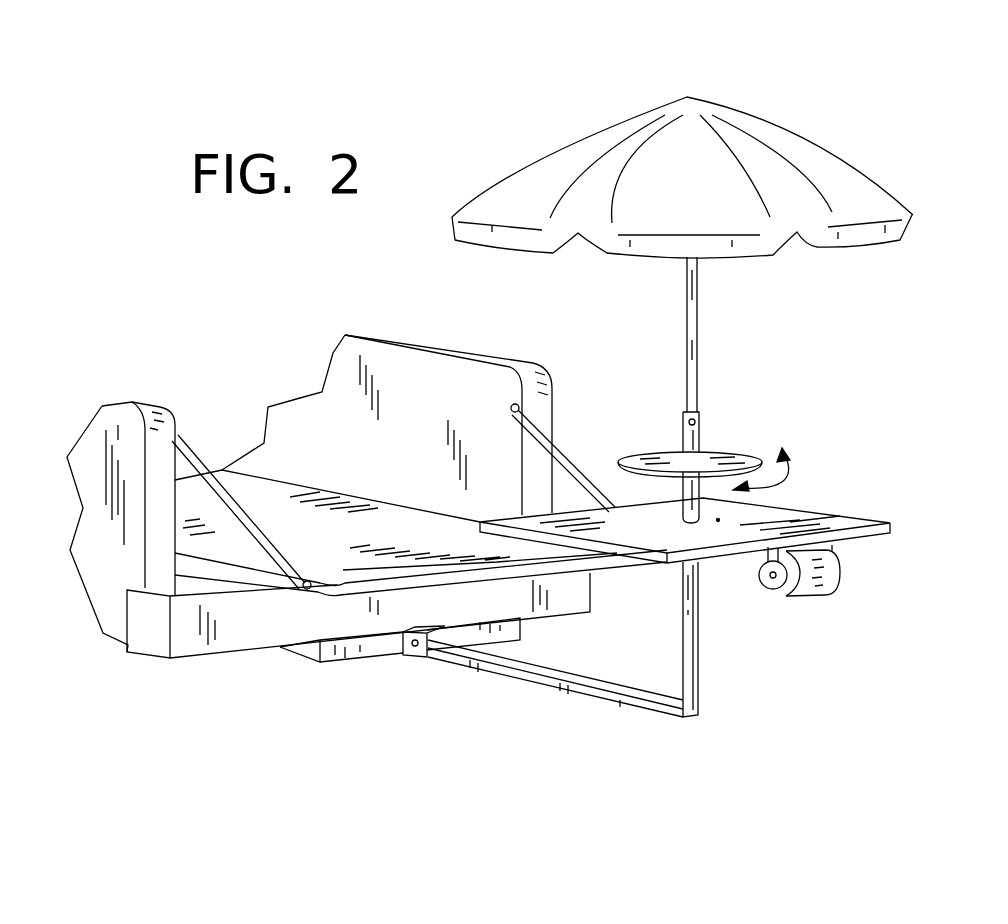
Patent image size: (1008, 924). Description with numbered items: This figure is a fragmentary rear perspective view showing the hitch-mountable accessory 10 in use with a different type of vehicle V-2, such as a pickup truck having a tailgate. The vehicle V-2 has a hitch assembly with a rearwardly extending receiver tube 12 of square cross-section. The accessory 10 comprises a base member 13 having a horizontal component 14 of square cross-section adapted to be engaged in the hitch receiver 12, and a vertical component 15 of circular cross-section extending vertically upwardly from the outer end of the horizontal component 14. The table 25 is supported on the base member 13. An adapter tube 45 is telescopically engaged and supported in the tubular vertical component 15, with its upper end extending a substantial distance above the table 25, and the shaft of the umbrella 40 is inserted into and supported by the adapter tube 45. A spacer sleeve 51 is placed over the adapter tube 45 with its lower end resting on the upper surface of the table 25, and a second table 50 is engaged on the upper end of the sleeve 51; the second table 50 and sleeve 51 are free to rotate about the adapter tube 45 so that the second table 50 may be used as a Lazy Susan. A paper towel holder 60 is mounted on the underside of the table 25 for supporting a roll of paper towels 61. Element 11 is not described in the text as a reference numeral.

The vehicle V-2 is at (313, 360).
The hitch-mountable accessory 10 is at (827, 388).
The mounting bar 11 is at (383, 650).
The receiver tube 12 is at (412, 657).
The base member 13 is at (633, 712).
The horizontal component 14 is at (550, 680).
The vertical component 15 is at (693, 663).
The table 25 is at (820, 503).
The umbrella 40 is at (805, 130).
The adapter tube 45 is at (682, 427).
The second table 50 is at (727, 442).
The spacer sleeve 51 is at (683, 512).
The paper towel holder 60 is at (765, 592).
The roll of paper towels 61 is at (812, 590).